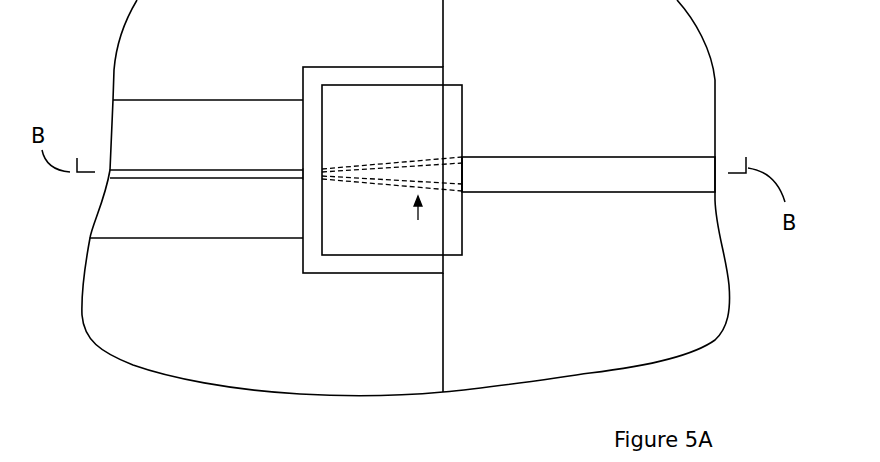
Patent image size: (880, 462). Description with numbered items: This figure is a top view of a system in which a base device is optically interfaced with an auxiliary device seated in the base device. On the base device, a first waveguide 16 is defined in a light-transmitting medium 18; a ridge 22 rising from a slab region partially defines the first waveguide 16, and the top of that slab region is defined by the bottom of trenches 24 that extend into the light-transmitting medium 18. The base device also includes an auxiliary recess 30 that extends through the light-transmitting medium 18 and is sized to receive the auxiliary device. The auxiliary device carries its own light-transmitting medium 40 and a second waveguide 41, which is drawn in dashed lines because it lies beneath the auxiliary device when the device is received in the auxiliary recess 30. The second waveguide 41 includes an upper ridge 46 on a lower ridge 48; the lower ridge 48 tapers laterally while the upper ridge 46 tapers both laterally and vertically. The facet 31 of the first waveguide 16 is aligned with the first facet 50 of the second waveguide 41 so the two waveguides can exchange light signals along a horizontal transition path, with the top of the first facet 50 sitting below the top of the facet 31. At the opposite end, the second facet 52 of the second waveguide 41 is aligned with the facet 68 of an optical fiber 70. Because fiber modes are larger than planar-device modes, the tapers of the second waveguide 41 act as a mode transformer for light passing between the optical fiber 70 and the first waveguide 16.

The light-transmitting medium 18 is at (145, 342).
The trenches 24 is at (192, 118).
The first waveguide 16 is at (138, 161).
The ridge 22 is at (190, 180).
The facet 31 is at (302, 174).
The auxiliary recess 30 is at (357, 66).
The light-transmitting medium 40 is at (444, 107).
The lower ridge 48 is at (345, 168).
The second facet 52 is at (460, 175).
The upper ridge 46 is at (397, 177).
The first facet 50 is at (323, 175).
The second waveguide 41 is at (418, 223).
The facet 68 is at (463, 170).
The optical fiber 70 is at (512, 192).